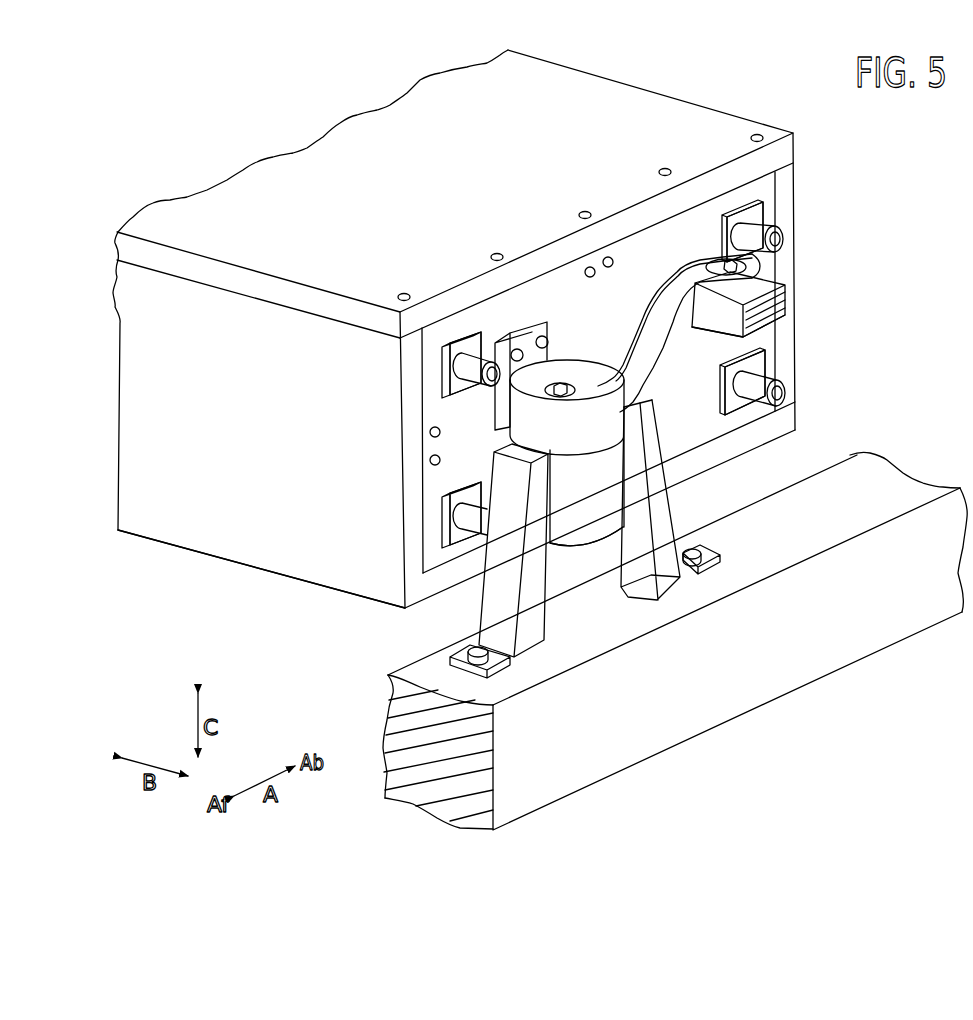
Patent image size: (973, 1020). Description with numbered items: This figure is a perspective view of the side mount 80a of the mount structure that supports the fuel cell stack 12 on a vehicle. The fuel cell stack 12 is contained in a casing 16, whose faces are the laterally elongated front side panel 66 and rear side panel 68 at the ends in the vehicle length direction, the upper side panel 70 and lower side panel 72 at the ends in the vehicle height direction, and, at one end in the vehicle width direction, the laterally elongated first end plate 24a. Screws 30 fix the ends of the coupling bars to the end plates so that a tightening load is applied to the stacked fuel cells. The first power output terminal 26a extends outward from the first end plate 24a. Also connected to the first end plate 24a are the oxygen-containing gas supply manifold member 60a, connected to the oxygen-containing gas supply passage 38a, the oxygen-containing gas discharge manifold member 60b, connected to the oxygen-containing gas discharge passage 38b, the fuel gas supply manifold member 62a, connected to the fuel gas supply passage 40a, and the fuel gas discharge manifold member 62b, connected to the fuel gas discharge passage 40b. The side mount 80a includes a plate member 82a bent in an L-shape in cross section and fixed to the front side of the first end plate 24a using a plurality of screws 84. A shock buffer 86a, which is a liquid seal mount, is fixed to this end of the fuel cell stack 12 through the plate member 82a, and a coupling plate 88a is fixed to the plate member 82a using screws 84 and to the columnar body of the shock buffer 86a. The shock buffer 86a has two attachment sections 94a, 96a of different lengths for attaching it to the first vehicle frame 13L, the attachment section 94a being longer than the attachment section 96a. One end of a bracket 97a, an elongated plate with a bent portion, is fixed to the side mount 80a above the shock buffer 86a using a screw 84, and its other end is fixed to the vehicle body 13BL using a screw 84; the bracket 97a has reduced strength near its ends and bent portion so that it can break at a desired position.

The fuel cell stack 12 is at (155, 195).
The casing 16 is at (262, 168).
The front side panel 66 is at (322, 565).
The upper side panel 70 is at (656, 104).
The lower side panel 72 is at (747, 443).
The rear side panel 68 is at (783, 270).
The screw 30 is at (608, 256).
The side mount 80a is at (563, 318).
The oxygen-containing gas supply manifold member 60a is at (778, 238).
The oxygen-containing gas supply passage 38a is at (745, 232).
The fuel gas supply manifold member 62a is at (787, 392).
The fuel gas supply passage 40a is at (745, 382).
The fuel gas discharge manifold member 62b is at (447, 386).
The fuel gas discharge passage 40b is at (465, 363).
The oxygen-containing gas discharge manifold member 60b is at (448, 516).
The oxygen-containing gas discharge passage 38b is at (465, 513).
The plate member 82a is at (527, 330).
The coupling plate 88a is at (610, 435).
The shock buffer 86a is at (577, 530).
The screw 84 is at (553, 372).
The first power output terminal 26a is at (622, 350).
The vehicle body 13BL is at (788, 300).
The first end plate 24a is at (763, 336).
The attachment section 96a is at (527, 623).
The attachment section 94a is at (667, 567).
The bracket 97a is at (642, 398).
The first vehicle frame 13L is at (858, 640).